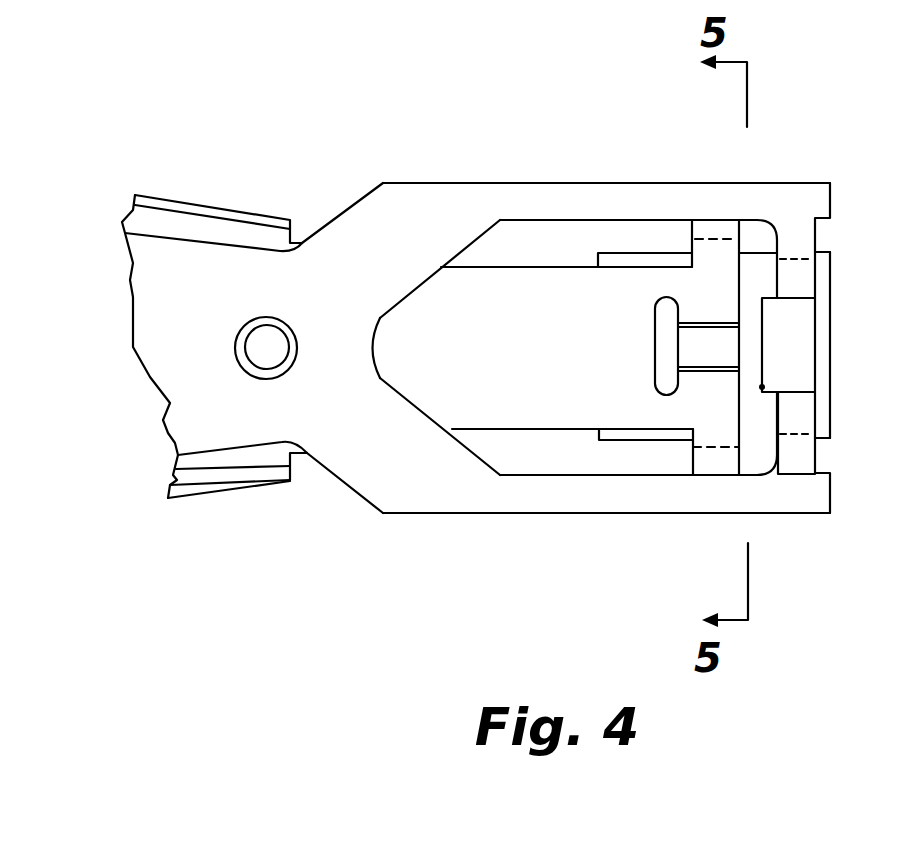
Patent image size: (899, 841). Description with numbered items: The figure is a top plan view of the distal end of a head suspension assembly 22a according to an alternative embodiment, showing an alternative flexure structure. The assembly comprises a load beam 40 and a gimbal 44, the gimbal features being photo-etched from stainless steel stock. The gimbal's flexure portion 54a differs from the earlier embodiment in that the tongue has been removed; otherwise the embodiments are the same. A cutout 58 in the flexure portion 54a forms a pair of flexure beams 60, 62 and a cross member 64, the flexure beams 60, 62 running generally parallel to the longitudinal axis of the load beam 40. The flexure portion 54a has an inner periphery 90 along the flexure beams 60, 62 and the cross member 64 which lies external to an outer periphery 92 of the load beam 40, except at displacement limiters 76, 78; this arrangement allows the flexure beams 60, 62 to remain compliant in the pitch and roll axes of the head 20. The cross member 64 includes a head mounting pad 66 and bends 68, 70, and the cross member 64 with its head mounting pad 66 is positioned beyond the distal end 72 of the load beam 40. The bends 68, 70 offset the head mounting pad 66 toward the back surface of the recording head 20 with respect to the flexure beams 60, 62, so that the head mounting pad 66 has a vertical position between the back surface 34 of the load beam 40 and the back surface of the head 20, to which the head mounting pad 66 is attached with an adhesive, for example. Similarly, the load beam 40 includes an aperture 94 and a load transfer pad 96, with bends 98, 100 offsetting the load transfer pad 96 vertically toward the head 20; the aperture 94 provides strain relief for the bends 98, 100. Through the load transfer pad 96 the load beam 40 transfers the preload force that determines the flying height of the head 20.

The head suspension assembly 22a is at (312, 135).
The flexure portion 54a is at (408, 176).
The flexure beam 60 is at (556, 185).
The flexure beam 62 is at (498, 495).
The load beam 40 is at (219, 198).
The gimbal 44 is at (180, 387).
The back surface 34 is at (427, 370).
The inner periphery 90 is at (438, 268).
The cutout 58 is at (487, 448).
The outer periphery 92 is at (484, 268).
The bend 98 is at (705, 322).
The aperture 94 is at (655, 323).
The load transfer pad 96 is at (697, 343).
The bend 100 is at (692, 372).
The displacement limiter 76 is at (690, 231).
The displacement limiter 78 is at (690, 457).
The bend 68 is at (800, 272).
The head mounting pad 66 is at (793, 332).
The bend 70 is at (800, 407).
The cross member 64 is at (828, 232).
The distal end 72 is at (740, 415).
The head 20 is at (838, 298).